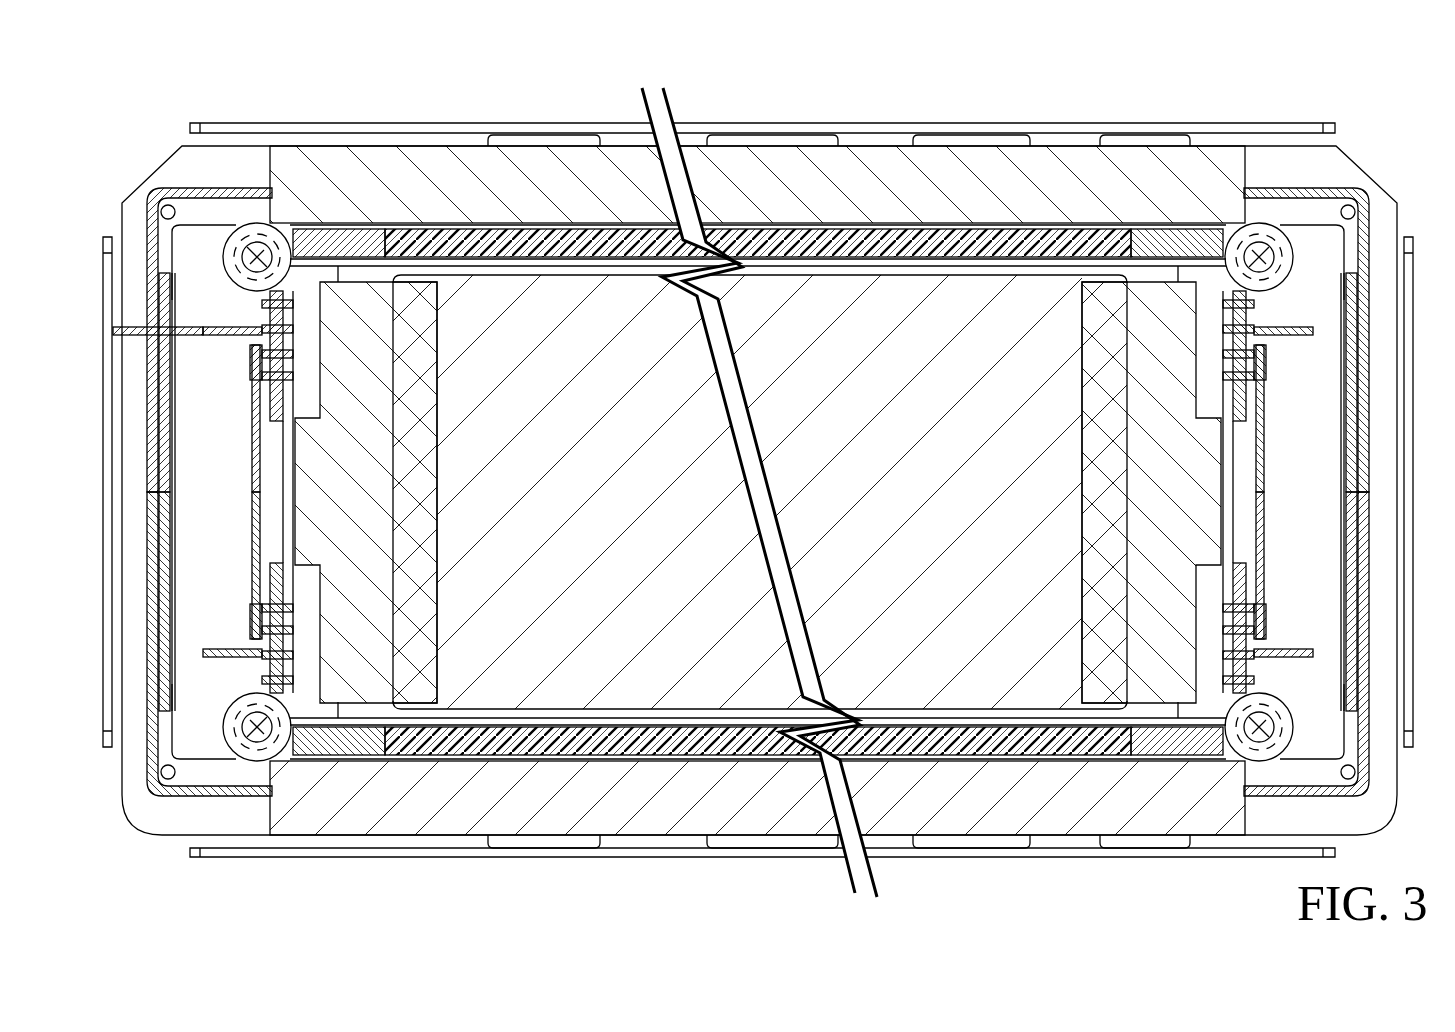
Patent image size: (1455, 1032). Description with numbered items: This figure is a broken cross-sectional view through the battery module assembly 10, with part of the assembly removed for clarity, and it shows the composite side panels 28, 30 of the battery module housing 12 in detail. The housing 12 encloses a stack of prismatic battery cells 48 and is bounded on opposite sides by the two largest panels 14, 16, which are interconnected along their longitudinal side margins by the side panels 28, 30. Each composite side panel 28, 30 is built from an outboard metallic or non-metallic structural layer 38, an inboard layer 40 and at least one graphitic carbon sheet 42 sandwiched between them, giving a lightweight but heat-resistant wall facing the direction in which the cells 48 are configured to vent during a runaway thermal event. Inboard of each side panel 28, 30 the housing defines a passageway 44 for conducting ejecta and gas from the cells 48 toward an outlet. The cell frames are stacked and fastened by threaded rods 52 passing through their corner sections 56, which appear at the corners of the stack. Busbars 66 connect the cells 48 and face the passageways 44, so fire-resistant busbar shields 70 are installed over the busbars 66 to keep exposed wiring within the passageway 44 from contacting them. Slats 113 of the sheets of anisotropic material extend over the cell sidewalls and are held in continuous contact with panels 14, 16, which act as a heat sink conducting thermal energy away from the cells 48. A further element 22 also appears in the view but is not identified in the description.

The battery module assembly 10 is at (765, 475).
The battery module housing 12 is at (896, 118).
The panel 14 is at (1092, 777).
The panel 16 is at (1048, 211).
The second cover plate 22 is at (668, 835).
The composite side panel 28 is at (143, 243).
The composite side panel 30 is at (1382, 640).
The outboard structural layer 38 is at (150, 678).
The inboard layer 40 is at (168, 468).
The graphitic carbon sheet 42 is at (162, 512).
The passageway 44 is at (244, 564).
The battery cell 48 is at (925, 350).
The threaded rod 52 is at (265, 252).
The corner section 56 is at (232, 270).
The busbar 66 is at (256, 604).
The busbar shield 70 is at (252, 413).
The slat 113 is at (765, 233).